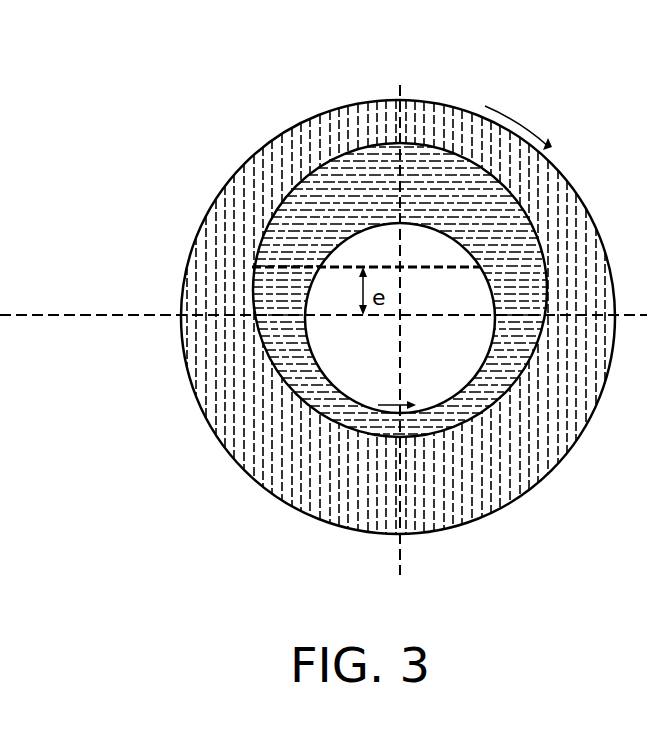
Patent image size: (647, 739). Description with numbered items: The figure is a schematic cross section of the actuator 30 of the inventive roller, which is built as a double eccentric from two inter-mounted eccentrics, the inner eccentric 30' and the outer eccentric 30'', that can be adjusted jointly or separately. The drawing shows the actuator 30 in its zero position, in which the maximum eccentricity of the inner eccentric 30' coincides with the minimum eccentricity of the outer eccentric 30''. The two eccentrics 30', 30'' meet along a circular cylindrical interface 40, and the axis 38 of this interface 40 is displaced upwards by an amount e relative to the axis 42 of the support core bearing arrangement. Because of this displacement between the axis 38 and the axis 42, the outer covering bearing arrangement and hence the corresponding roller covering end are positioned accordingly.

The actuator 30 is at (398, 290).
The inner eccentric 30' is at (358, 290).
The outer eccentric 30'' is at (374, 317).
The axis of the circular cylindrical interface 38 is at (403, 264).
The circular cylindrical interface 40 is at (298, 400).
The axis of the support core bearing arrangement 42 is at (453, 363).